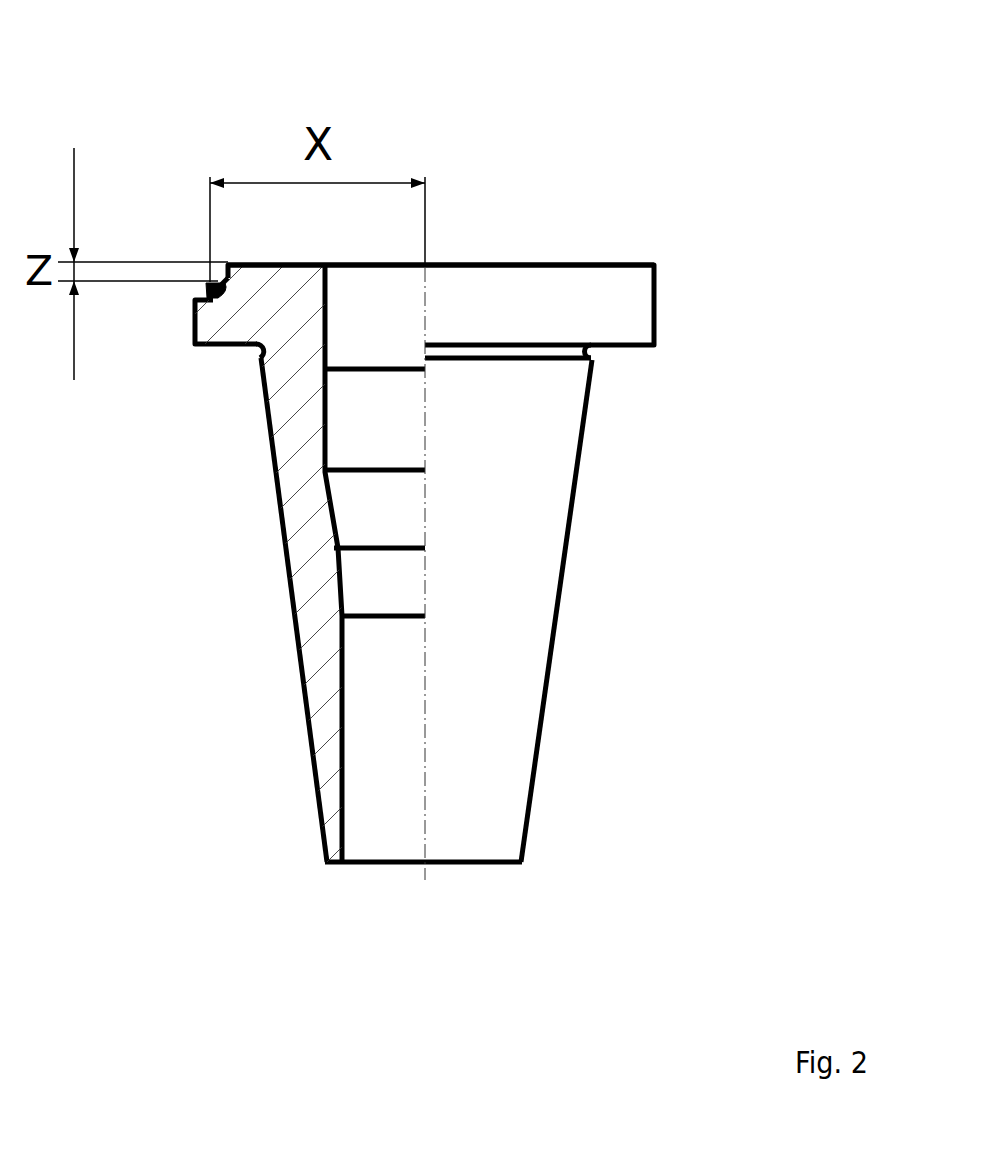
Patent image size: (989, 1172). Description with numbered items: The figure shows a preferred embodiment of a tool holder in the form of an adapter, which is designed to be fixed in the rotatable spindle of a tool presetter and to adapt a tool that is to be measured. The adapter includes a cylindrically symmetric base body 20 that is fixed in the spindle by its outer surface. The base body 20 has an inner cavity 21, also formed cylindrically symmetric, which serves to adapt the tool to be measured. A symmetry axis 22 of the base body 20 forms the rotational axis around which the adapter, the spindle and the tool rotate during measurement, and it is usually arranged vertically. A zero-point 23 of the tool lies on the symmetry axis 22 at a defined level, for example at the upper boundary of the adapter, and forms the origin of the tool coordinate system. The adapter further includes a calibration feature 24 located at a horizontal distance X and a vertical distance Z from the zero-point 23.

The base body 20 is at (527, 518).
The inner cavity 21 is at (383, 327).
The symmetry axis 22 is at (425, 865).
The zero-point 23 is at (427, 266).
The calibration feature 24 is at (211, 284).